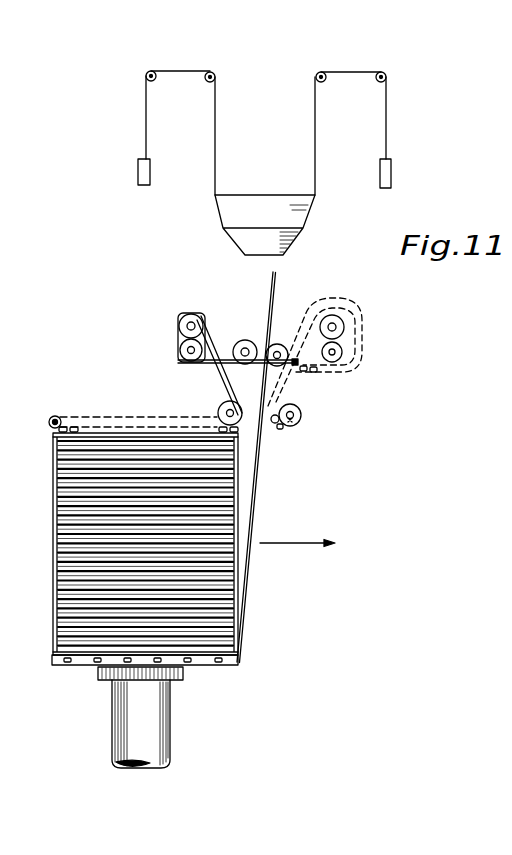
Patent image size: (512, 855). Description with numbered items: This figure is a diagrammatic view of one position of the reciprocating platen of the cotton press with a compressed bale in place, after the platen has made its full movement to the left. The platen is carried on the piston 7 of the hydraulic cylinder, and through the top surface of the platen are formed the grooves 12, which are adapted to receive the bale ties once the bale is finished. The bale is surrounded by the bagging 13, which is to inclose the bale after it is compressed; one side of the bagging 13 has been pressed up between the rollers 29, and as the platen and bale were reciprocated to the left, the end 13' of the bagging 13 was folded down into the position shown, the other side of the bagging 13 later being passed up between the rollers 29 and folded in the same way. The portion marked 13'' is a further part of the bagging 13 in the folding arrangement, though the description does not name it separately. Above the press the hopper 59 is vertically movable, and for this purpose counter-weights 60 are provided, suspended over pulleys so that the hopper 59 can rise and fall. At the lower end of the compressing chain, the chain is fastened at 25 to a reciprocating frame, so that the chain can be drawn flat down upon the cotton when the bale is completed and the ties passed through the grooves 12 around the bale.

The hopper 59 is at (247, 203).
The counter-weights 60 is at (383, 177).
The bagging 13 is at (154, 467).
The end of the bagging 13' is at (138, 412).
The strip feeding roller unit 13'' is at (247, 359).
The rollers 29 is at (243, 423).
The fastening point of compressing chain 25 is at (53, 417).
The grooves 12 is at (97, 663).
The piston 7 is at (148, 723).